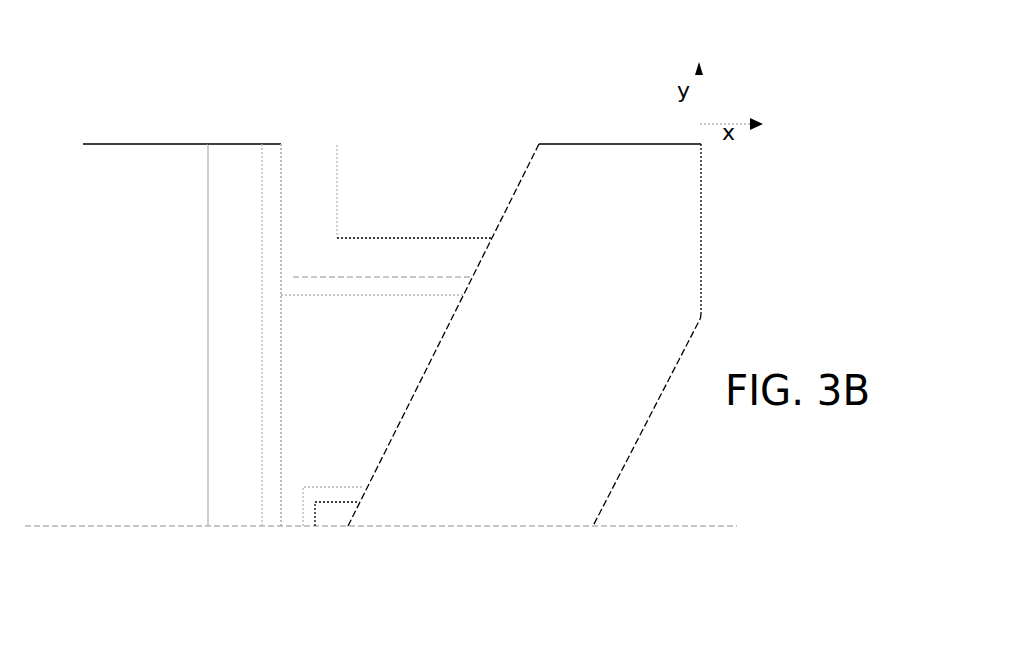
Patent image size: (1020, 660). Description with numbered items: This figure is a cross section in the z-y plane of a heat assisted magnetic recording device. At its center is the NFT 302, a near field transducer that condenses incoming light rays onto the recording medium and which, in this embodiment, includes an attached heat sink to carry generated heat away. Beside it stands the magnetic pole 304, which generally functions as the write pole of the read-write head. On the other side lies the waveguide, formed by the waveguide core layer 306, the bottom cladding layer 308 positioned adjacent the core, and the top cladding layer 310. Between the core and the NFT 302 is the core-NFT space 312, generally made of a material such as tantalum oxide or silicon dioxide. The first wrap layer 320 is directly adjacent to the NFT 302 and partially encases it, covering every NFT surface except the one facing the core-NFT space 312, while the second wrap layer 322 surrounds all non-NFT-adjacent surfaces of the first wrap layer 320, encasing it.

The NFT 302 is at (328, 372).
The magnetic pole 304 is at (562, 311).
The waveguide core layer 306 is at (217, 191).
The bottom cladding layer 308 is at (127, 267).
The top cladding layer 310 is at (457, 172).
The core-NFT space 312 is at (270, 162).
The first wrap layer 320 is at (328, 292).
The second wrap layer 322 is at (380, 257).